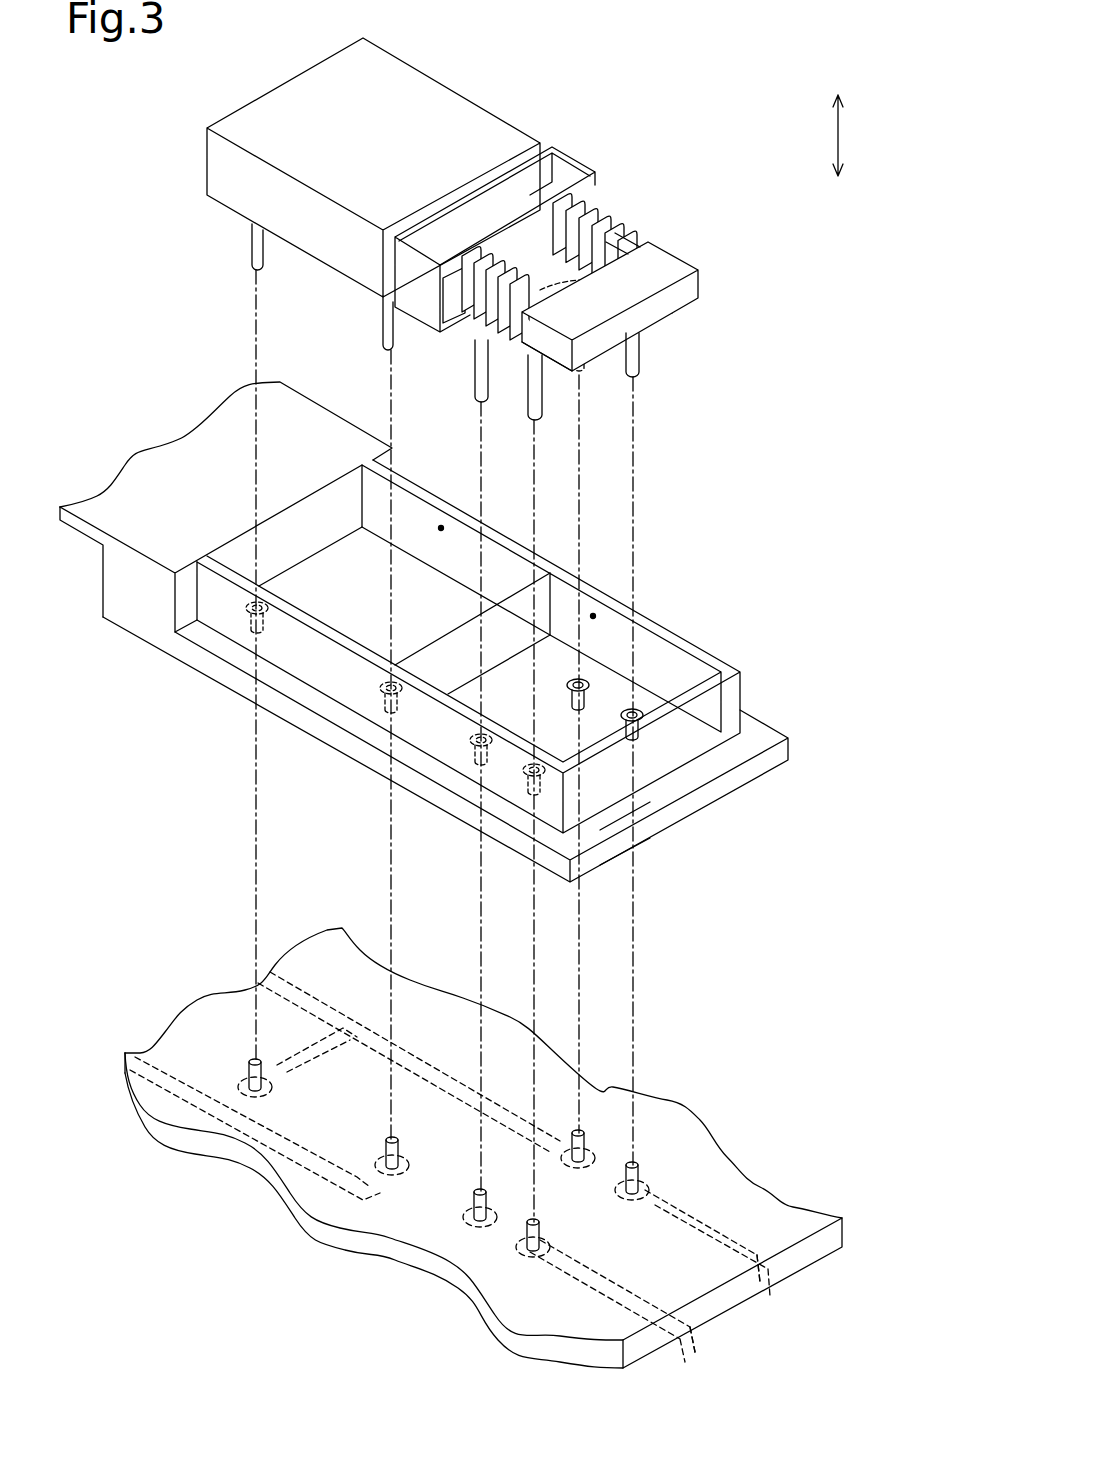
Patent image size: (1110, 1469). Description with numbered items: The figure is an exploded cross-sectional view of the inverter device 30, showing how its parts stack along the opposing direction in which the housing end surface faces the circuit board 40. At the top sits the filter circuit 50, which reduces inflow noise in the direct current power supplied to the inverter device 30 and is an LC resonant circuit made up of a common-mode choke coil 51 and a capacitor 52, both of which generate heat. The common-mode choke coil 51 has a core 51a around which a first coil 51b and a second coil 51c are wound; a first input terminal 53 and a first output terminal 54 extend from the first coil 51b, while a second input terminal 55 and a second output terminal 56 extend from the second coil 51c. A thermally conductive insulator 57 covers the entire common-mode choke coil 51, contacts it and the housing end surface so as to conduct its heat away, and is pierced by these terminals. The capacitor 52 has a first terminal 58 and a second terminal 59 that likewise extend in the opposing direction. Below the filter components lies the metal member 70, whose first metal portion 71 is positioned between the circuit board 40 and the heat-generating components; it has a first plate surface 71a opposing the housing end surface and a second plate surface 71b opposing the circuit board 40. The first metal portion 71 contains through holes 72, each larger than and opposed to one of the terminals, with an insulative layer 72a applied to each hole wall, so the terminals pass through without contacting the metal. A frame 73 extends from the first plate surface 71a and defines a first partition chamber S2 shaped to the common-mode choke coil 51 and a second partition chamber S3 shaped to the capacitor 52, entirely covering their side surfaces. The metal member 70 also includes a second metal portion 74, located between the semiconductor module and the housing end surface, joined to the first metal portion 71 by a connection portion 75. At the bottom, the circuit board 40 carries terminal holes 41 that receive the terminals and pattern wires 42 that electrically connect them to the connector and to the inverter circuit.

The inverter device 30 is at (734, 102).
The circuit board 40 is at (483, 1152).
The terminal holes 41 is at (623, 1163).
The pattern wires 42 is at (752, 1289).
The filter circuit 50 is at (643, 174).
The common-mode choke coil 51 is at (663, 282).
The core 51a is at (698, 275).
The first coil 51b is at (660, 316).
The second coil 51c is at (648, 222).
The capacitor 52 is at (455, 106).
The first input terminal 53 is at (543, 404).
The first output terminal 54 is at (489, 384).
The second input terminal 55 is at (640, 376).
The second output terminal 56 is at (598, 376).
The thermally conductive insulator 57 is at (558, 172).
The first terminal 58 is at (394, 332).
The second terminal 59 is at (265, 256).
The metal member 70 is at (791, 732).
The first metal portion 71 is at (692, 803).
The first plate surface 71a is at (712, 764).
The second plate surface 71b is at (650, 841).
The through holes 72 is at (628, 710).
The insulative layer 72a is at (566, 676).
The frame 73 is at (733, 694).
The second metal portion 74 is at (112, 502).
The connection portion 75 is at (141, 610).
The first partition chamber S2 is at (592, 612).
The second partition chamber S3 is at (441, 527).